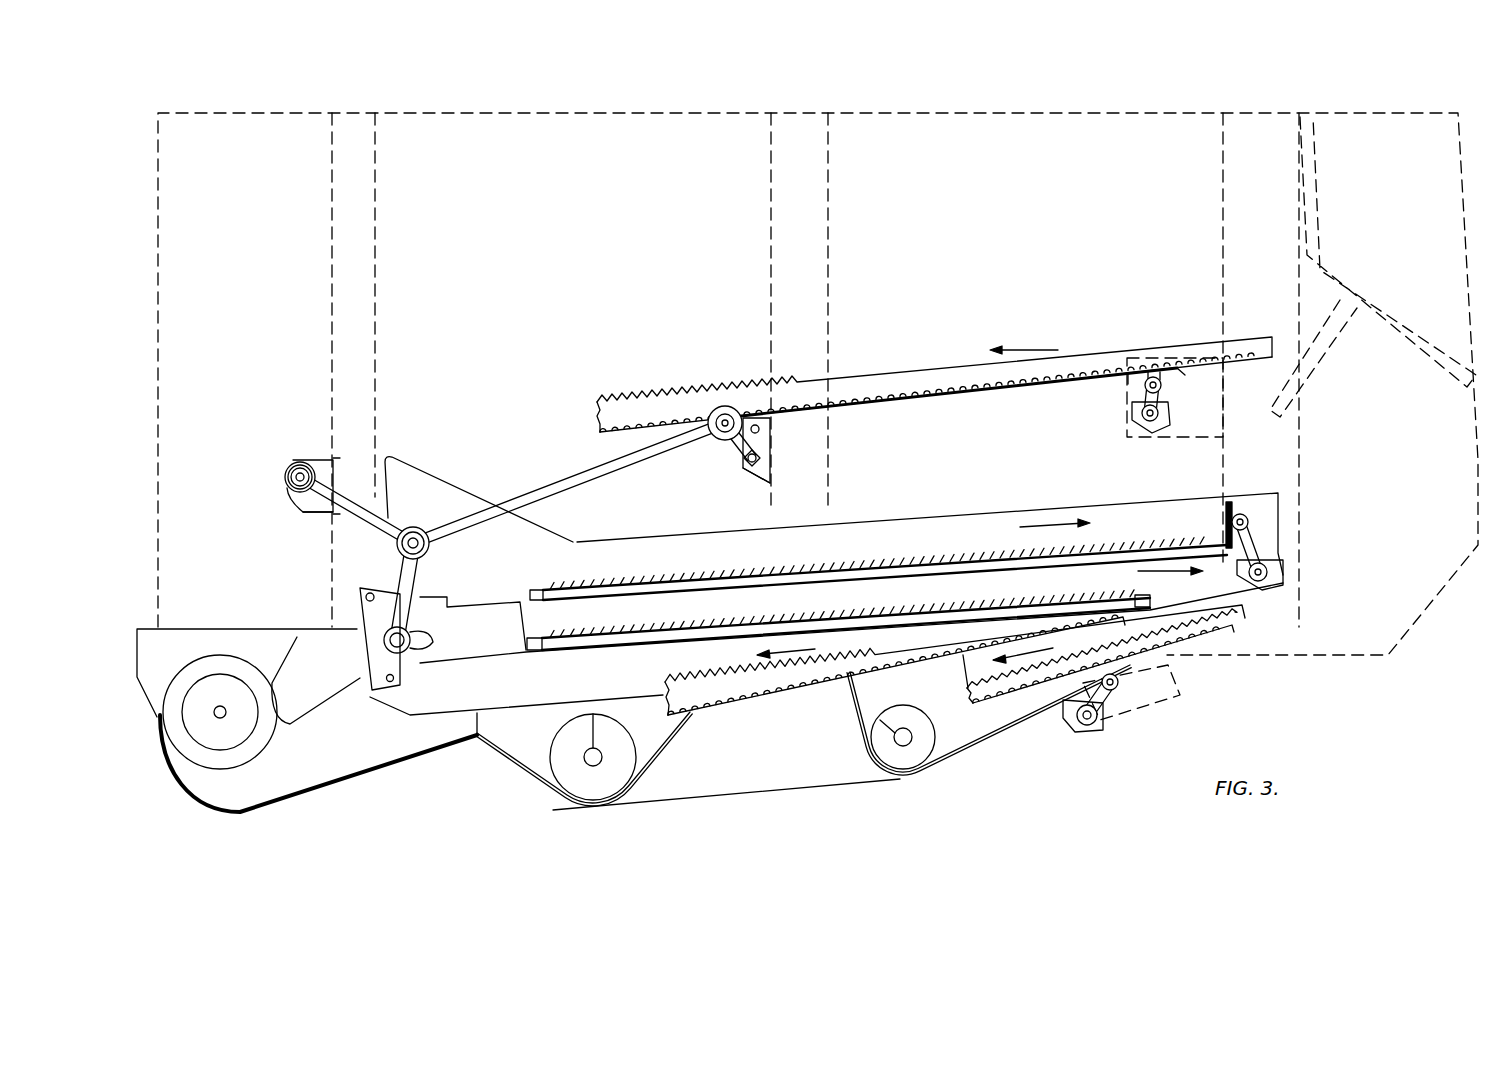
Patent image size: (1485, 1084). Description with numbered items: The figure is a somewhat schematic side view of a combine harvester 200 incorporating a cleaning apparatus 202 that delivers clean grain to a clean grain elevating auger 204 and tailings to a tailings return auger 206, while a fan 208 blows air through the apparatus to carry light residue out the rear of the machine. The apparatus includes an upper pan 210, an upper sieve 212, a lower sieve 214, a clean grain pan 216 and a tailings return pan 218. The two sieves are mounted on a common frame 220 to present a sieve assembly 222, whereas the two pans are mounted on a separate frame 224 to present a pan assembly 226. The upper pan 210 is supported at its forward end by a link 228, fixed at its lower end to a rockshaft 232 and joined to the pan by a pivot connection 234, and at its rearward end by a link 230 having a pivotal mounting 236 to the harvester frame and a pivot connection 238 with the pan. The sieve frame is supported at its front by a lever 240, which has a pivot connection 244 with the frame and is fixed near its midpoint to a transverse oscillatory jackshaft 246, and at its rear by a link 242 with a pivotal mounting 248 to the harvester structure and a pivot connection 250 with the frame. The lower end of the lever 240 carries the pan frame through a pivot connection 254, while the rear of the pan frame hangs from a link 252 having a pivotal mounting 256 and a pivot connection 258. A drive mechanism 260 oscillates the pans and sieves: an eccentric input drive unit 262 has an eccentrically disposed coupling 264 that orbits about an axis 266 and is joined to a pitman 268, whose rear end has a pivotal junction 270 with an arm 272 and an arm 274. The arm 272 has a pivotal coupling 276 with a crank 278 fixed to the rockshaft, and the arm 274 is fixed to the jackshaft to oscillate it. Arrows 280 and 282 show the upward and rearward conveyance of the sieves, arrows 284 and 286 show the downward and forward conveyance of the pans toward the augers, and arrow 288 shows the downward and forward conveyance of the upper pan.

The combine harvester 200 is at (972, 95).
The cleaning apparatus 202 is at (510, 352).
The clean grain elevating auger 204 is at (598, 787).
The tailings return auger 206 is at (907, 757).
The fan 208 is at (245, 792).
The upper pan 210 is at (907, 378).
The upper sieve 212 is at (823, 570).
The lower sieve 214 is at (897, 608).
The clean grain pan 216 is at (707, 693).
The tailings return pan 218 is at (965, 692).
The common frame 220 is at (933, 523).
The sieve assembly 222 is at (1078, 500).
The separate frame 224 is at (450, 707).
The pan assembly 226 is at (410, 715).
The link 228 is at (760, 440).
The link 230 is at (1158, 396).
The rockshaft 232 is at (745, 470).
The pivot connection 234 is at (760, 429).
The pivotal mounting 236 is at (1141, 412).
The pivot connection 238 is at (1153, 376).
The lever 240 is at (372, 655).
The link 242 is at (1280, 535).
The pivot connection 244 is at (365, 598).
The jackshaft 246 is at (410, 640).
The pivotal mounting 248 is at (1247, 513).
The pivot connection 250 is at (1267, 583).
The link 252 is at (1113, 703).
The pivot connection 254 is at (387, 687).
The pivotal mounting 256 is at (1090, 713).
The pivot connection 258 is at (1178, 693).
The drive mechanism 260 is at (443, 490).
The eccentric input drive unit 262 is at (298, 462).
The eccentrically disposed coupling 264 is at (285, 476).
The axis 266 is at (297, 511).
The pitman 268 is at (350, 518).
The pivotal junction 270 is at (418, 527).
The arm 272 is at (590, 476).
The arm 274 is at (413, 573).
The pivotal coupling 276 is at (725, 406).
The crank 278 is at (735, 447).
The arrow 280 is at (1043, 525).
The arrow 282 is at (1160, 568).
The arrow 284 is at (797, 657).
The arrow 286 is at (1035, 660).
The arrow 288 is at (1028, 357).